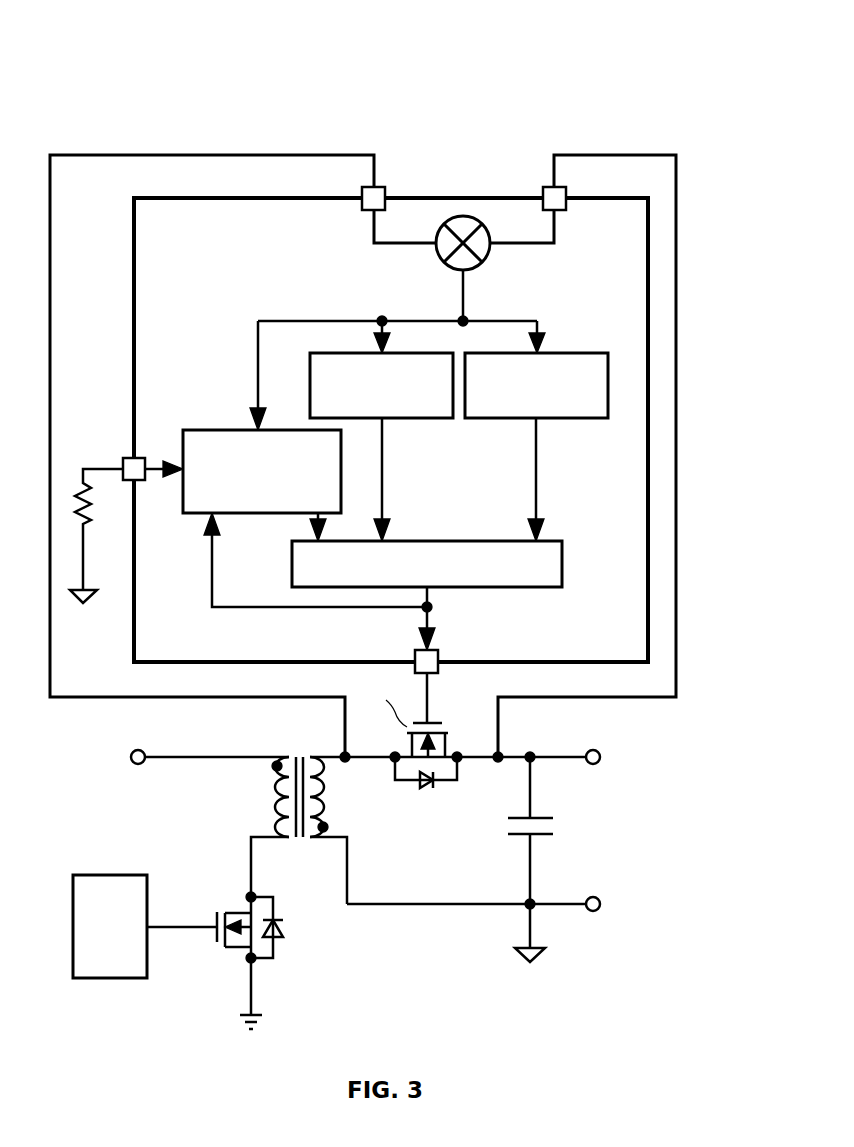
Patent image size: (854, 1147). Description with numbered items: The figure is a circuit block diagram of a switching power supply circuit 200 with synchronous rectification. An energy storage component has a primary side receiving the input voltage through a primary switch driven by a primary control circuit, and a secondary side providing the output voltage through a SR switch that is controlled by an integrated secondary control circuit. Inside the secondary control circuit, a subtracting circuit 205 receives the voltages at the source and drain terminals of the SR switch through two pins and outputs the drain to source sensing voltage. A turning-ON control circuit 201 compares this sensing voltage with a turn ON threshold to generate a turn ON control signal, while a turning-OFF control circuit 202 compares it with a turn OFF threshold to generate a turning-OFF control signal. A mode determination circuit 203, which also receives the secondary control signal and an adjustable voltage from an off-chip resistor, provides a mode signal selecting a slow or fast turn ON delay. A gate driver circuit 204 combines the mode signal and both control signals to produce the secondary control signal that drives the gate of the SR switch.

The switching power supply circuit 200 is at (592, 58).
The turning-ON control circuit 201 is at (310, 363).
The turning-OFF control circuit 202 is at (568, 353).
The mode determination circuit 203 is at (200, 430).
The gate driver circuit 204 is at (427, 564).
The subtracting circuit 205 is at (482, 253).